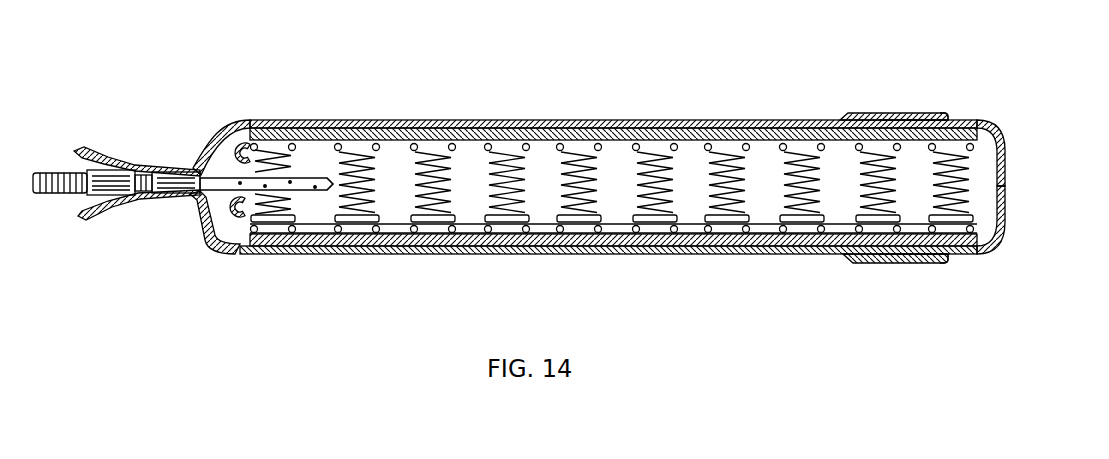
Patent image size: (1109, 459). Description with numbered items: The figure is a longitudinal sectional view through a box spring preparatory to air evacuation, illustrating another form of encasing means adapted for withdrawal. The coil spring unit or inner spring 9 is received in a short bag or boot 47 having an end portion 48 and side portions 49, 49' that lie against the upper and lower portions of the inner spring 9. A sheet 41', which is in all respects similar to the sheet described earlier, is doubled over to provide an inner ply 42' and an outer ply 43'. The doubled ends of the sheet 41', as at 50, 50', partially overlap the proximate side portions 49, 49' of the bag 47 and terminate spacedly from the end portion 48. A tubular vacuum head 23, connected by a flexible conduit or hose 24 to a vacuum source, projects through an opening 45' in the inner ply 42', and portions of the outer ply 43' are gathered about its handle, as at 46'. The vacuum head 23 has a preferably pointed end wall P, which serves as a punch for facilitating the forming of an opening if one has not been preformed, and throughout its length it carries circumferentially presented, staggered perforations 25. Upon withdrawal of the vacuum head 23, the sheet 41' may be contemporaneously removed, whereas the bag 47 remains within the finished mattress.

The flexible conduit 24 is at (43, 171).
The gathered portions of outer ply 46' is at (170, 130).
The opening 45' is at (221, 127).
The vacuum head 23 is at (257, 142).
The perforations 25 is at (292, 177).
The pointed end wall P is at (320, 181).
The inner spring 9 is at (478, 167).
The outer ply 43' is at (608, 141).
The inner ply 42' is at (613, 152).
The sheet 41' is at (894, 148).
The doubled end of sheet 50 is at (913, 87).
The side portion of bag 49 is at (964, 94).
The bag 47 is at (1004, 150).
The end portion of bag 48 is at (1004, 212).
The side portion of bag 49' is at (984, 277).
The doubled end of sheet 50' is at (915, 290).